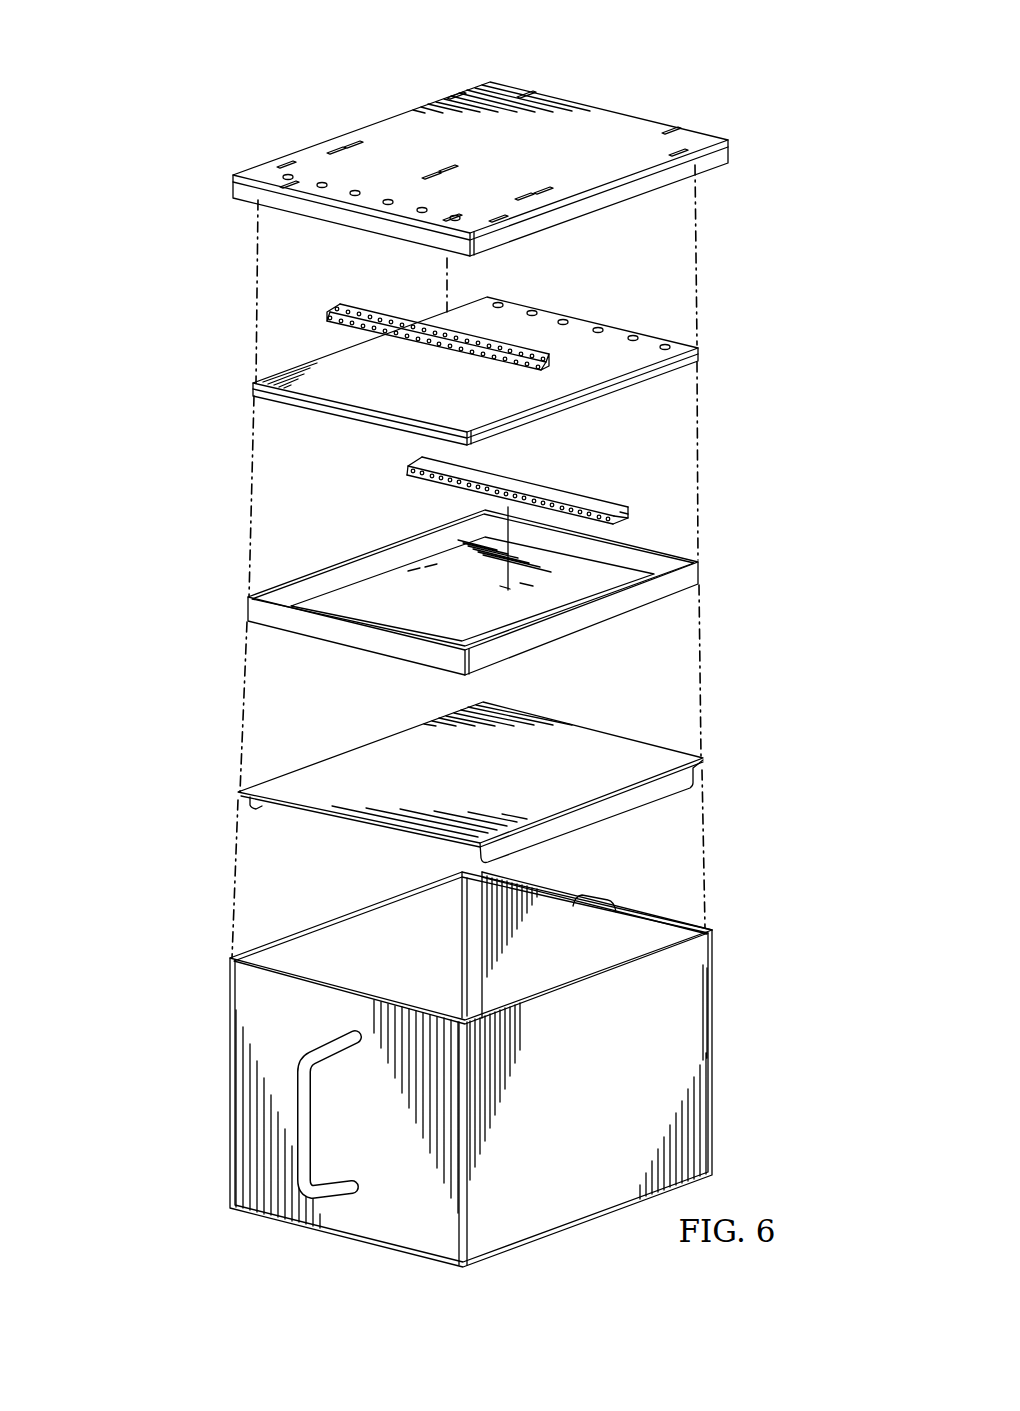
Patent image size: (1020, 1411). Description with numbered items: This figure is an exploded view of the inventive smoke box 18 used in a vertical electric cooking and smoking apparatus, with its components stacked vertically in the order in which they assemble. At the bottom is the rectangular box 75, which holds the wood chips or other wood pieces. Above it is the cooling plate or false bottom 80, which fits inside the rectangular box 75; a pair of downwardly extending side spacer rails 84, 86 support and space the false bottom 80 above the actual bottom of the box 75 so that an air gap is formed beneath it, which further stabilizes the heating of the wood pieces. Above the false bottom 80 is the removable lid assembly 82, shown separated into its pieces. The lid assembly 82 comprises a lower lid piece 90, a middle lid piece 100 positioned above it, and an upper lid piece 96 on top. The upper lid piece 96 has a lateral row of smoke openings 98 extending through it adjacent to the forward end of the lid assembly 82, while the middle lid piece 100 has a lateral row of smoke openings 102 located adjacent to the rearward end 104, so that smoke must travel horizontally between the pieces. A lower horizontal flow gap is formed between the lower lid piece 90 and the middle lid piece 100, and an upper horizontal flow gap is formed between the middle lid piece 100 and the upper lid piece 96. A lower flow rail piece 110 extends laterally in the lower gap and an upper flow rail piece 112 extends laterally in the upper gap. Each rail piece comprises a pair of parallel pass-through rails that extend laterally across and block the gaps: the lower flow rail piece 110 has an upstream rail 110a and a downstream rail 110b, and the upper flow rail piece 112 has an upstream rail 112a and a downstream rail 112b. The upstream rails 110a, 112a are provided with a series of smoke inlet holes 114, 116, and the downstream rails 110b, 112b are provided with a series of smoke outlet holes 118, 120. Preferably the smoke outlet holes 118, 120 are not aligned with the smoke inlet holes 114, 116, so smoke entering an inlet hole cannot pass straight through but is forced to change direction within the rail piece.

The smoke box 18 is at (134, 150).
The rectangular box 75 is at (713, 1065).
The false bottom 80 is at (470, 778).
The lid assembly 82 is at (476, 153).
The side spacer rail 84 is at (265, 809).
The side spacer rail 86 is at (631, 815).
The lower lid piece 90 is at (473, 597).
The upper lid piece 96 is at (411, 106).
The smoke openings 98 is at (455, 215).
The middle lid piece 100 is at (475, 366).
The smoke openings 102 is at (530, 305).
The rearward end 104 is at (604, 320).
The lower flow rail piece 110 is at (507, 486).
The upstream rail 110a is at (405, 470).
The downstream rail 110b is at (620, 522).
The upper flow rail piece 112 is at (492, 344).
The upstream rail 112a is at (549, 357).
The downstream rail 112b is at (321, 311).
The smoke inlet holes 114 is at (446, 483).
The smoke inlet holes 116 is at (385, 312).
The smoke outlet holes 118 is at (628, 519).
The smoke outlet holes 120 is at (466, 356).